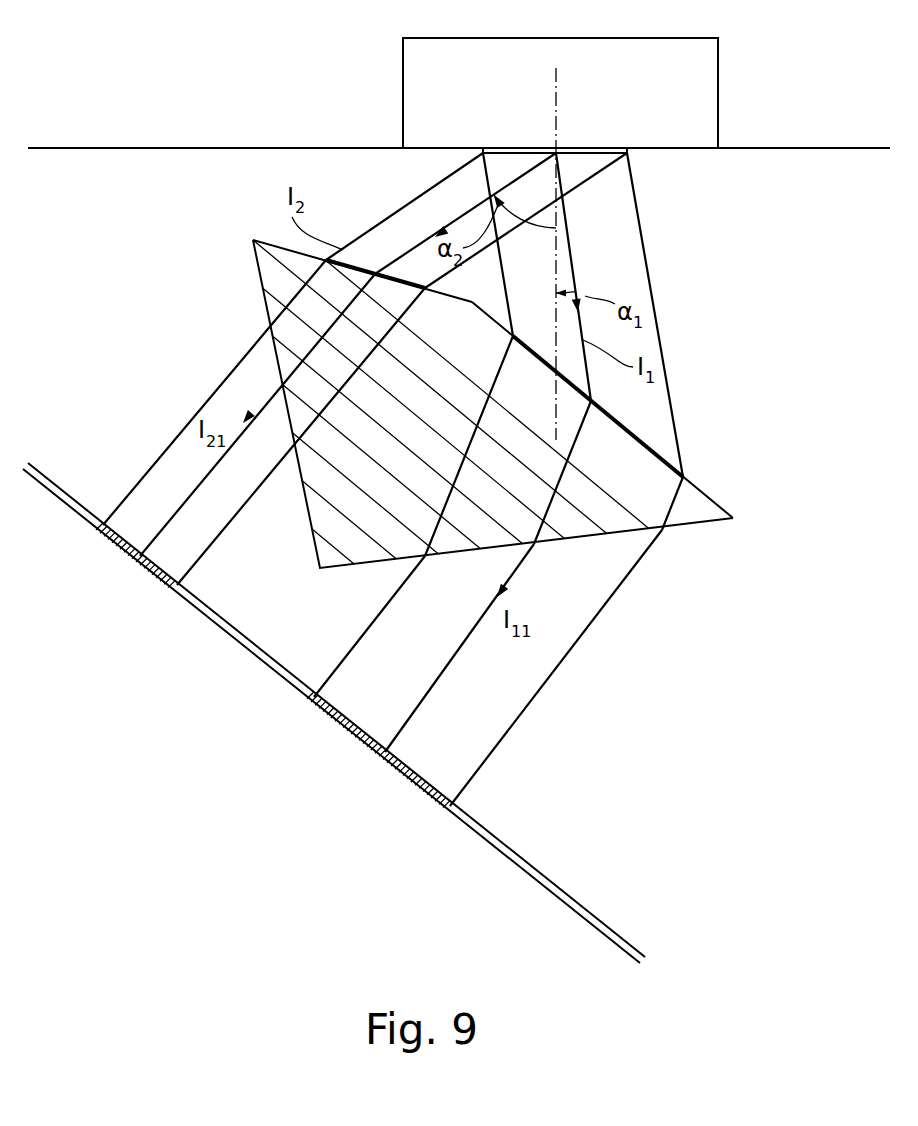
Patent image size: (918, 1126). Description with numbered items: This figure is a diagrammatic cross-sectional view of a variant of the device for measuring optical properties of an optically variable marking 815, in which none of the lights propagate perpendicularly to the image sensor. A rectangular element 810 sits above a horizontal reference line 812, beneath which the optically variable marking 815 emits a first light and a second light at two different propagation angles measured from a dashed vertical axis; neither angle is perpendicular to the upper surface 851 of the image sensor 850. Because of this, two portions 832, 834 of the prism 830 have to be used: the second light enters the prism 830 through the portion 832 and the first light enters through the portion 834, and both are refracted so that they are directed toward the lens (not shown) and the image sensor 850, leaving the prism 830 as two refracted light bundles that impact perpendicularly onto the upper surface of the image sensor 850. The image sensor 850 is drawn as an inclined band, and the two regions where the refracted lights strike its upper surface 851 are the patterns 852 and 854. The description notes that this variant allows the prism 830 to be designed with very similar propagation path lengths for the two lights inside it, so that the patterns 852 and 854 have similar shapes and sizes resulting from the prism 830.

The light source housing 810 is at (700, 100).
The reference surface 812 is at (703, 150).
The optically variable marking 815 is at (600, 172).
The prism 830 is at (652, 534).
The portion of prism 832 is at (285, 268).
The portion of prism 834 is at (693, 507).
The image sensor 850 is at (435, 800).
The upper surface of image sensor 851 is at (520, 858).
The pattern 852 is at (120, 547).
The pattern 854 is at (403, 758).